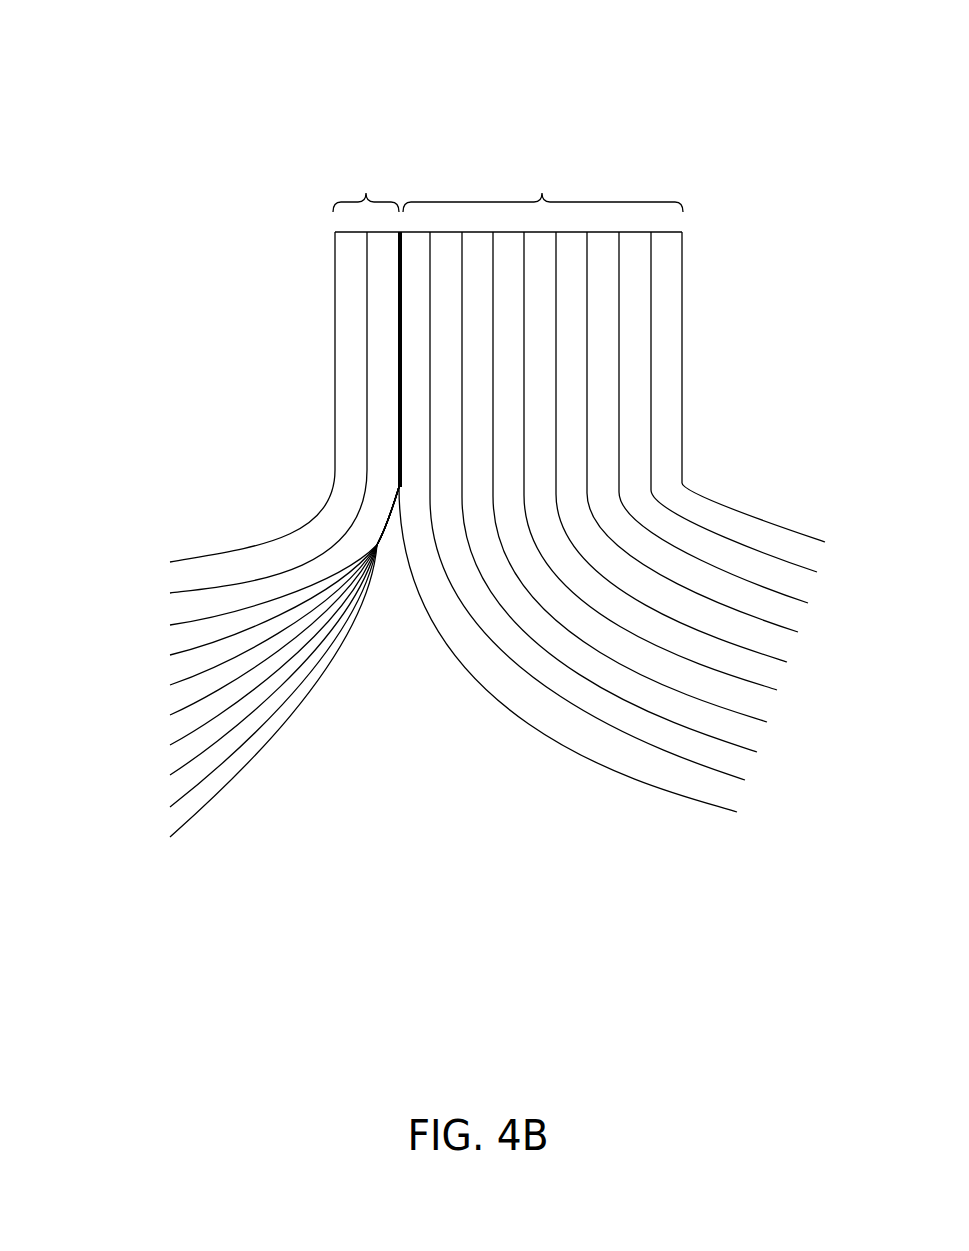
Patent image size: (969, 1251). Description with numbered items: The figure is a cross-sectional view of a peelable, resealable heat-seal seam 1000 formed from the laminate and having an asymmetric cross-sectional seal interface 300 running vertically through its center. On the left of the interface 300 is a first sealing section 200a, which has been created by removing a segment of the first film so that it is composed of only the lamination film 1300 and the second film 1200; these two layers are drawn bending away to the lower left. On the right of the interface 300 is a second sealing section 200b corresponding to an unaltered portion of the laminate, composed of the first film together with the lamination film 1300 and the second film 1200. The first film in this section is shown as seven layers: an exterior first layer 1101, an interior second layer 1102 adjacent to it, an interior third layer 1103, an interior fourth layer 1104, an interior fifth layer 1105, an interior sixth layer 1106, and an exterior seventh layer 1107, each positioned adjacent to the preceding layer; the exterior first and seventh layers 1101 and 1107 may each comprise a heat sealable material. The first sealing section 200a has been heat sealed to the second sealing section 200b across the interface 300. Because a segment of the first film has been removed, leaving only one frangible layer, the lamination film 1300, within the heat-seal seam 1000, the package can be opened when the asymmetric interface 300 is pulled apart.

The peelable, resealable heat-seal seam 1000 is at (522, 38).
The first sealing section 200a is at (366, 184).
The second sealing section 200b is at (543, 184).
The asymmetric cross-sectional seal interface 300 is at (391, 537).
The second film 1200 is at (352, 278).
The lamination film 1300 is at (377, 358).
The exterior first layer 1101 is at (600, 409).
The interior second layer 1102 is at (568, 385).
The interior third layer 1103 is at (535, 362).
The interior fourth layer 1104 is at (505, 345).
The interior fifth layer 1105 is at (478, 325).
The interior sixth layer 1106 is at (450, 300).
The exterior seventh layer 1107 is at (418, 275).